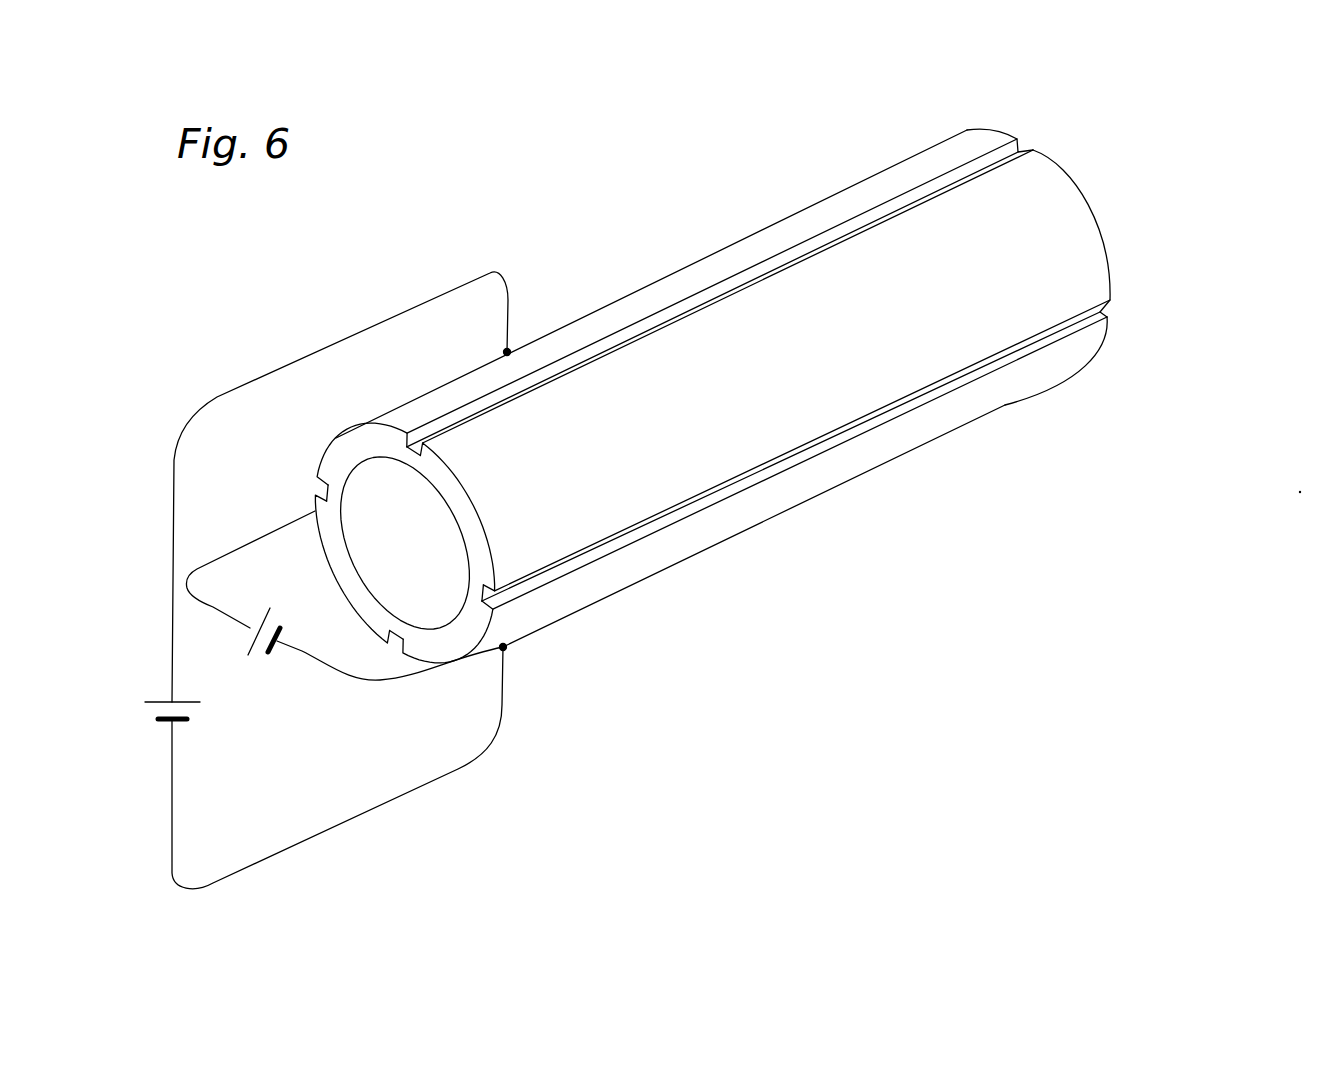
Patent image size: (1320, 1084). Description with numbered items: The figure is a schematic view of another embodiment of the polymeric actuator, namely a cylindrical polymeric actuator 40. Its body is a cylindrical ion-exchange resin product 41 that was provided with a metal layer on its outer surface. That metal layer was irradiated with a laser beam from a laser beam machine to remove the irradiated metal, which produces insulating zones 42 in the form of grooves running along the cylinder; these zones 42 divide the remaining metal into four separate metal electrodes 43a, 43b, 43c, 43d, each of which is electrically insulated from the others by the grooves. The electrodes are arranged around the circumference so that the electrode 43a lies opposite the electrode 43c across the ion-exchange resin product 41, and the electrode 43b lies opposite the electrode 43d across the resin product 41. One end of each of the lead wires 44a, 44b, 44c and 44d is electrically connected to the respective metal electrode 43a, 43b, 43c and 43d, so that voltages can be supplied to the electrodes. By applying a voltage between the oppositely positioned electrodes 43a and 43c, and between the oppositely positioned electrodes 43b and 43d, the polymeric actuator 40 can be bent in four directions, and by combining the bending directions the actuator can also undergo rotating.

The cylindrical polymeric actuator 40 is at (1104, 224).
The cylindrical ion-exchange resin product 41 is at (360, 455).
The insulating zone 42 is at (740, 278).
The metal electrode 43a is at (618, 305).
The metal electrode 43b is at (1060, 272).
The metal electrode 43c is at (848, 460).
The metal electrode 43d is at (345, 600).
The lead wire 44a is at (218, 396).
The lead wire 44b is at (392, 677).
The lead wire 44c is at (222, 886).
The lead wire 44d is at (193, 568).